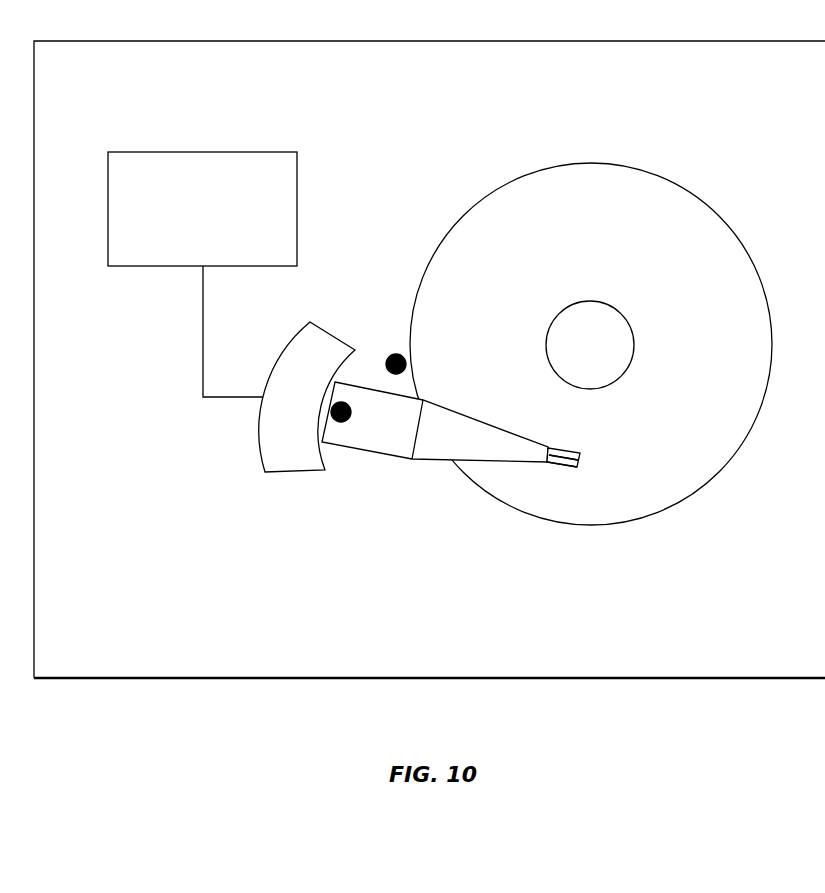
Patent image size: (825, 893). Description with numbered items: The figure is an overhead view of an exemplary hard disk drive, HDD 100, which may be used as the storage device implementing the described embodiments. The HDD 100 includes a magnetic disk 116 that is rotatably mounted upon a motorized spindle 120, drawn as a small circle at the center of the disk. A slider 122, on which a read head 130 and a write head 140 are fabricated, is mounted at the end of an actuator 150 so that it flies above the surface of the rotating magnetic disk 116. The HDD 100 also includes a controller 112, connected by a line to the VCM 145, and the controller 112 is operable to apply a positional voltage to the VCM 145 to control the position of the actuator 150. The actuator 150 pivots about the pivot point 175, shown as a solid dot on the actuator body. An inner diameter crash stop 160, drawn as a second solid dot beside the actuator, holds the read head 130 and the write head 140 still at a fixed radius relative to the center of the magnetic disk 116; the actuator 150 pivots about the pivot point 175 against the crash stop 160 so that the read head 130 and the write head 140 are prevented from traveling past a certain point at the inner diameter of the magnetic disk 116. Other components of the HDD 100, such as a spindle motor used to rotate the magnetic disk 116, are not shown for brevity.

The HDD 100 is at (429, 359).
The controller 112 is at (183, 235).
The magnetic disk 116 is at (569, 273).
The spindle 120 is at (635, 348).
The slider 122 is at (577, 466).
The read head 130 is at (567, 447).
The write head 140 is at (567, 467).
The VCM 145 is at (278, 472).
The actuator 150 is at (343, 448).
The crash stop 160 is at (388, 356).
The pivot point 175 is at (344, 415).